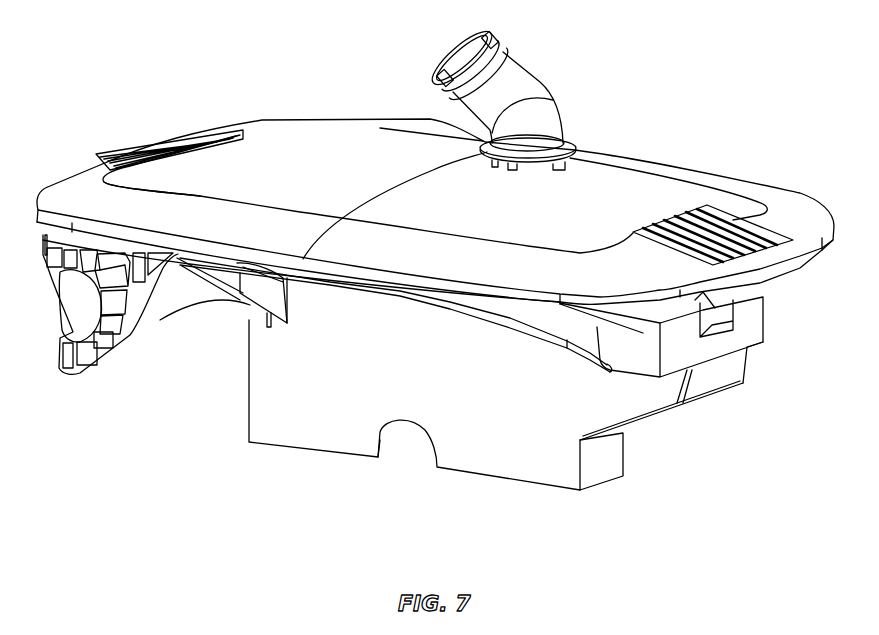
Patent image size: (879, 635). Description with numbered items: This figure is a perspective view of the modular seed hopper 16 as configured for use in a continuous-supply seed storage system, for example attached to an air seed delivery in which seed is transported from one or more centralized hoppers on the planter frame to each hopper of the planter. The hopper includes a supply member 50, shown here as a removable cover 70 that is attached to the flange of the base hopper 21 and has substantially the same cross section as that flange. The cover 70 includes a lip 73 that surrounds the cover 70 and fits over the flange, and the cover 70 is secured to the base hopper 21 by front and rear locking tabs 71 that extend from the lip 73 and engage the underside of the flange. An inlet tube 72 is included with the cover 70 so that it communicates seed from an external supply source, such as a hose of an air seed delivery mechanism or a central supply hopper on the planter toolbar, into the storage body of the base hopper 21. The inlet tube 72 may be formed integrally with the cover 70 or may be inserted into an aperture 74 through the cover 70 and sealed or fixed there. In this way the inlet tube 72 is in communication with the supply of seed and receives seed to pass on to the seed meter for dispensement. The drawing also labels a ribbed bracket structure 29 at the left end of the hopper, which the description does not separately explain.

The modular seed hopper 16 is at (432, 274).
The removable cover 70 is at (435, 226).
The supply member 50 is at (172, 178).
The inlet tube 72 is at (513, 69).
The aperture 74 is at (550, 164).
The locking tabs 71 is at (773, 280).
The lip 73 is at (228, 298).
The mounting bracket 29 is at (75, 383).
The base hopper 21 is at (607, 483).